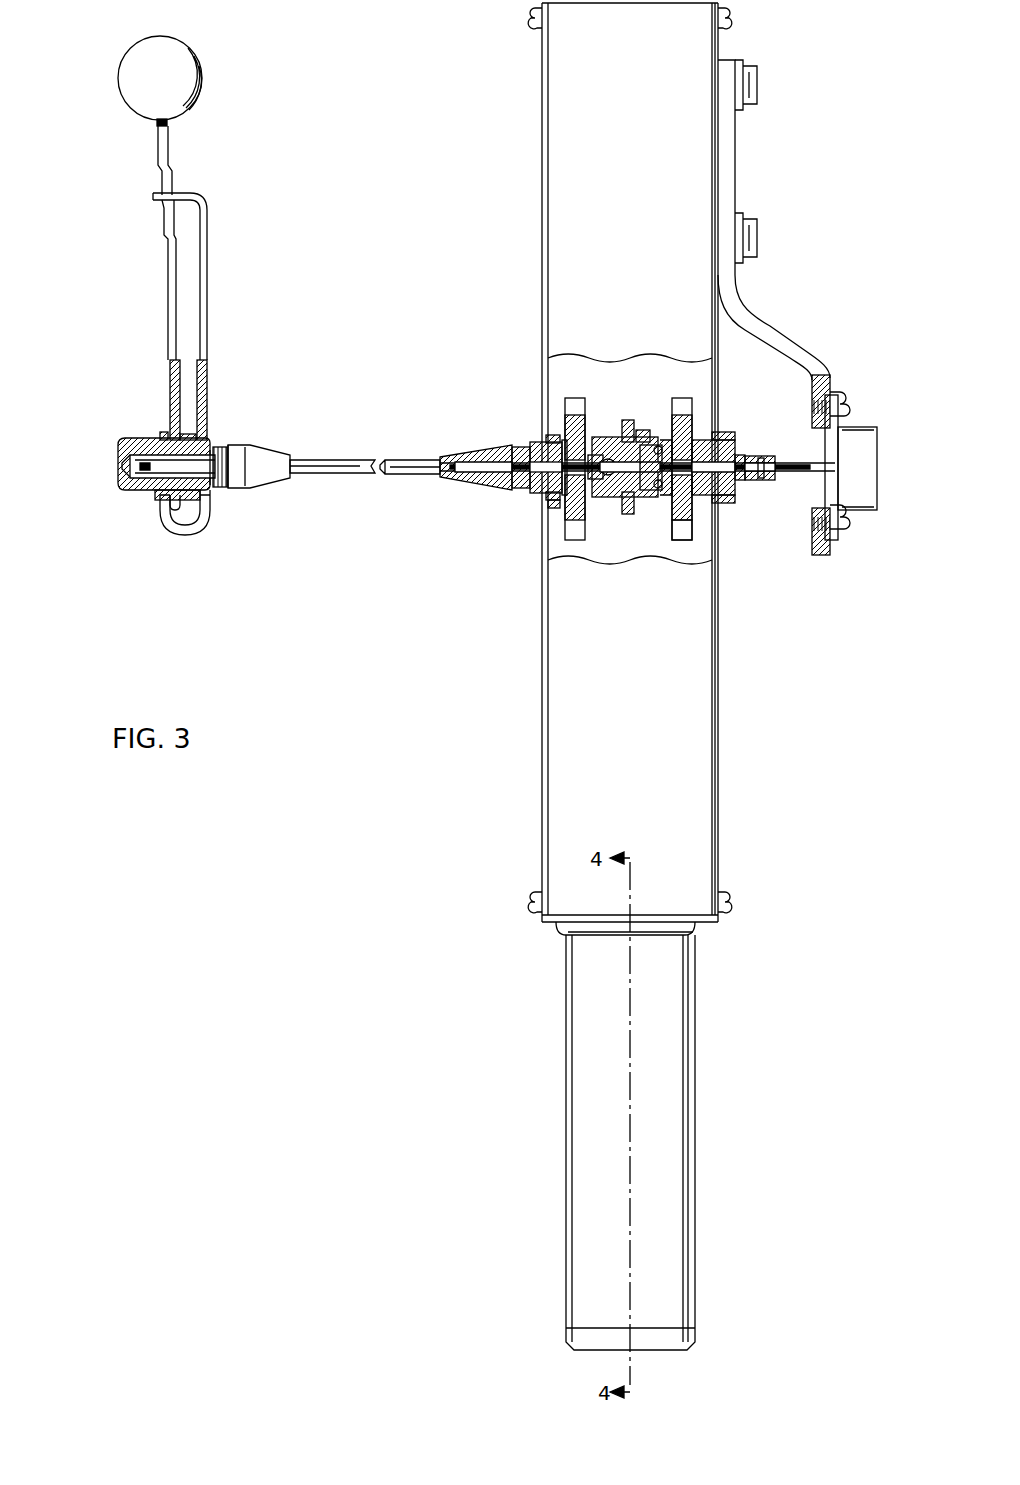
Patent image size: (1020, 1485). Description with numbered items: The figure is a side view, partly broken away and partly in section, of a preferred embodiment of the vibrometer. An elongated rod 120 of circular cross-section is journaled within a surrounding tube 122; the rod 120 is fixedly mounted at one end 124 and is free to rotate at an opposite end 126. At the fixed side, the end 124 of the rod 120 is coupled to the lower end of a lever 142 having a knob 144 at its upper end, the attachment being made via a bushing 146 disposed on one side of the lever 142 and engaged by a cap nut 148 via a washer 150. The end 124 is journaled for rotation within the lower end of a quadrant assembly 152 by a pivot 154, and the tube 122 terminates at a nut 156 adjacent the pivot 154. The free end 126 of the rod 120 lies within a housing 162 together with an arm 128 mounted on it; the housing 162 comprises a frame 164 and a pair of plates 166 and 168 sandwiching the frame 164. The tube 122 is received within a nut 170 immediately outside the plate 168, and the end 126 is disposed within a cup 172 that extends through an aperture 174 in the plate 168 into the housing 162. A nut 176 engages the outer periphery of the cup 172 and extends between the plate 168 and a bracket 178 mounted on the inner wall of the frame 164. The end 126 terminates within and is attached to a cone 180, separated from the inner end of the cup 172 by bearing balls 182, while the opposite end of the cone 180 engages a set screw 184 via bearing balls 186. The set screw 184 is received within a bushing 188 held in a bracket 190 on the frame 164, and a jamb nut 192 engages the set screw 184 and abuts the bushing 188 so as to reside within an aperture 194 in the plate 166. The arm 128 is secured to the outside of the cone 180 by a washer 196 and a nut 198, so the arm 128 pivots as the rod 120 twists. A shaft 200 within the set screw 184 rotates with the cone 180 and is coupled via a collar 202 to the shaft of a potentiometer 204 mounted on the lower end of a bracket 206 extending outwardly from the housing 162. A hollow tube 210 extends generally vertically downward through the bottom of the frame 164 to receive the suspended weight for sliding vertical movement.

The rod 120 is at (451, 455).
The tube 122 is at (403, 458).
The end of the rod 124 is at (128, 466).
The free end of the rod 126 is at (611, 456).
The arm 128 is at (628, 420).
The lever 142 is at (168, 270).
The knob 144 is at (202, 65).
The bushing 146 is at (197, 432).
The cap nut 148 is at (120, 438).
The washer 150 is at (165, 431).
The quadrant assembly 152 is at (207, 269).
The pivot 154 is at (222, 449).
The nut 156 is at (268, 452).
The housing 162 is at (702, 847).
The frame 164 is at (712, 789).
The plate 166 is at (718, 812).
The plate 168 is at (542, 816).
The nut 170 is at (495, 451).
The cup 172 is at (544, 500).
The aperture 174 is at (543, 442).
The nut 176 is at (548, 435).
The bracket 178 is at (568, 398).
The cone 180 is at (600, 497).
The bearing balls 182 is at (583, 500).
The set screw 184 is at (663, 500).
The bearing balls 186 is at (649, 440).
The bushing 188 is at (705, 523).
The bracket 190 is at (680, 540).
The jamb nut 192 is at (725, 455).
The aperture 194 is at (720, 498).
The washer 196 is at (662, 432).
The nut 198 is at (665, 440).
The shaft 200 is at (768, 458).
The collar 202 is at (763, 478).
The potentiometer 204 is at (875, 512).
The bracket 206 is at (754, 299).
The hollow tube 210 is at (696, 1080).